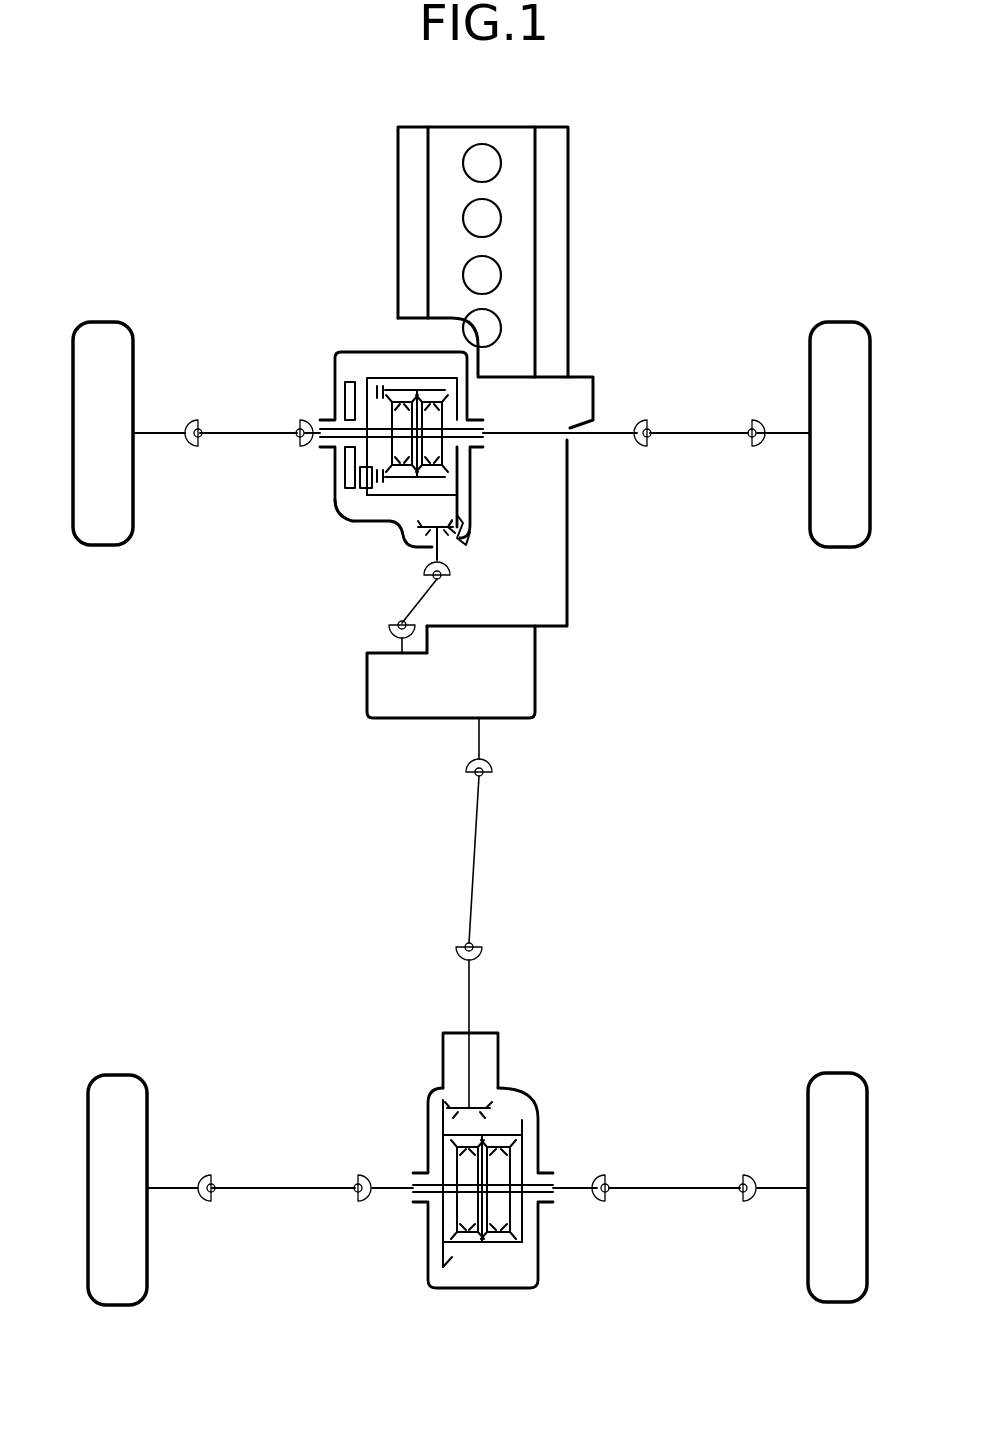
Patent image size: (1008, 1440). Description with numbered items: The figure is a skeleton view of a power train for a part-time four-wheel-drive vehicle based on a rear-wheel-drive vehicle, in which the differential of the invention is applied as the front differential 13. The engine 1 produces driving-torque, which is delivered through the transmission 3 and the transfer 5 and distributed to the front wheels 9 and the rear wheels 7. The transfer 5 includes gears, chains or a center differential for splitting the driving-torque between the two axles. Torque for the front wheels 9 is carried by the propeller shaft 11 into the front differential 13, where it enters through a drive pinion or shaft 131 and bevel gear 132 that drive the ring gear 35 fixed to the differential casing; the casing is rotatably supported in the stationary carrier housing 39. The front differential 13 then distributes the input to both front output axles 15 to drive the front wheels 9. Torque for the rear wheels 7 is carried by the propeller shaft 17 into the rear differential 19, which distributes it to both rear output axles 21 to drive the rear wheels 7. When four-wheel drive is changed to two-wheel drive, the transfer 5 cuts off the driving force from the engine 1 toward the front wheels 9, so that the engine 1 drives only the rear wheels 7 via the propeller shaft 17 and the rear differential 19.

The engine 1 is at (556, 210).
The transmission 3 is at (548, 560).
The transfer 5 is at (540, 657).
The rear wheels 7 is at (115, 1078).
The front wheels 9 is at (97, 322).
The propeller shaft 11 is at (418, 595).
The front differential 13 is at (337, 518).
The front output axles 15 is at (247, 436).
The propeller shaft 17 is at (475, 852).
The rear differential 19 is at (545, 1118).
The rear output axles 21 is at (296, 1190).
The ring gear 35 is at (453, 518).
The carrier housing 39 is at (362, 352).
The drive pinion or shaft 131 is at (450, 557).
The bevel gear 132 is at (465, 543).